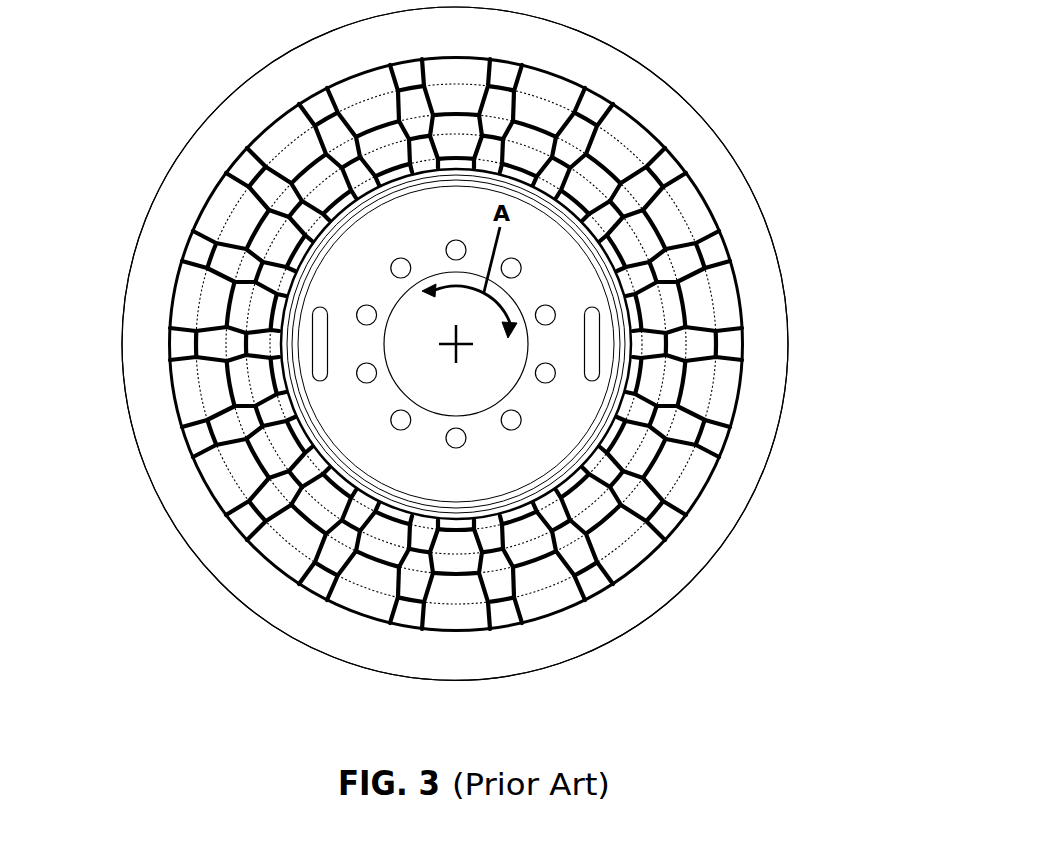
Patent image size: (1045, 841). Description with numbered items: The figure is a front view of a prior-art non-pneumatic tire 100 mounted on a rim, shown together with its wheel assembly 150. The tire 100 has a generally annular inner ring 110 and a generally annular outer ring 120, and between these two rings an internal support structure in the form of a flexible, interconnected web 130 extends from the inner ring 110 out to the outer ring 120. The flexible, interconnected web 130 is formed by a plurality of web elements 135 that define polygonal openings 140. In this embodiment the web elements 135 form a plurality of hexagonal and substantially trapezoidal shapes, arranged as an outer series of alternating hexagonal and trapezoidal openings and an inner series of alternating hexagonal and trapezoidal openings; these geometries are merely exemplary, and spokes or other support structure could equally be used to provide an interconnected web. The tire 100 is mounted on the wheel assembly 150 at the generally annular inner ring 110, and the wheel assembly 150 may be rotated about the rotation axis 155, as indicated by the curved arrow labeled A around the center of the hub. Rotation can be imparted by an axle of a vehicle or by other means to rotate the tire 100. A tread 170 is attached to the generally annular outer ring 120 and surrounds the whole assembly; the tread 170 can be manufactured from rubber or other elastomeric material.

The tire 100 is at (125, 138).
The generally annular inner ring 110 is at (296, 249).
The generally annular outer ring 120 is at (167, 285).
The flexible, interconnected web 130 is at (685, 222).
The web elements 135 is at (680, 304).
The polygonal openings 140 is at (722, 386).
The wheel assembly 150 is at (362, 413).
The rotation axis 155 is at (461, 353).
The tread 170 is at (683, 549).